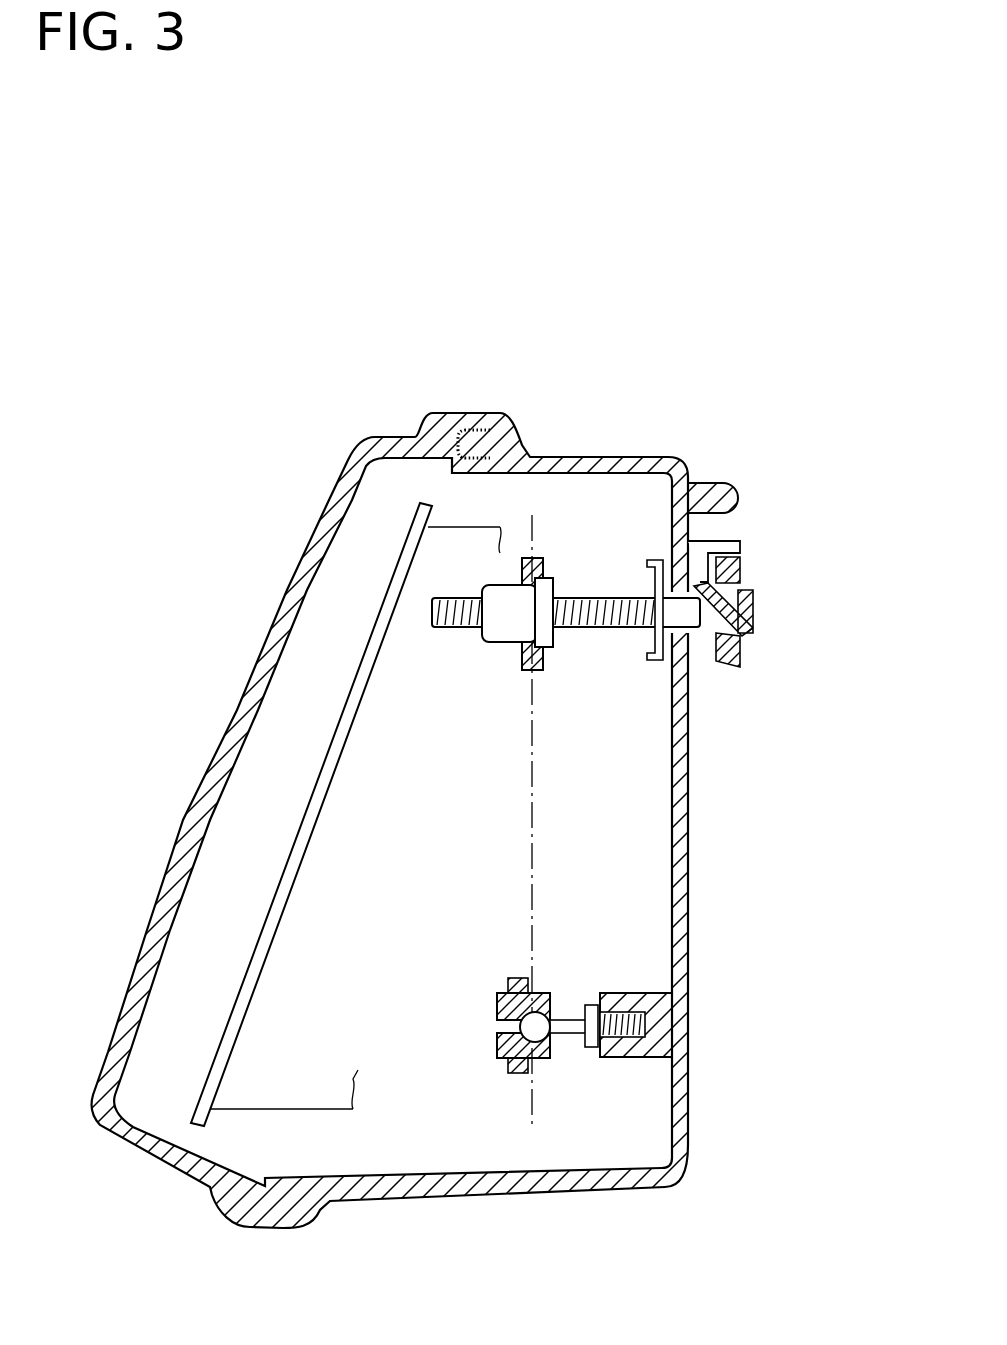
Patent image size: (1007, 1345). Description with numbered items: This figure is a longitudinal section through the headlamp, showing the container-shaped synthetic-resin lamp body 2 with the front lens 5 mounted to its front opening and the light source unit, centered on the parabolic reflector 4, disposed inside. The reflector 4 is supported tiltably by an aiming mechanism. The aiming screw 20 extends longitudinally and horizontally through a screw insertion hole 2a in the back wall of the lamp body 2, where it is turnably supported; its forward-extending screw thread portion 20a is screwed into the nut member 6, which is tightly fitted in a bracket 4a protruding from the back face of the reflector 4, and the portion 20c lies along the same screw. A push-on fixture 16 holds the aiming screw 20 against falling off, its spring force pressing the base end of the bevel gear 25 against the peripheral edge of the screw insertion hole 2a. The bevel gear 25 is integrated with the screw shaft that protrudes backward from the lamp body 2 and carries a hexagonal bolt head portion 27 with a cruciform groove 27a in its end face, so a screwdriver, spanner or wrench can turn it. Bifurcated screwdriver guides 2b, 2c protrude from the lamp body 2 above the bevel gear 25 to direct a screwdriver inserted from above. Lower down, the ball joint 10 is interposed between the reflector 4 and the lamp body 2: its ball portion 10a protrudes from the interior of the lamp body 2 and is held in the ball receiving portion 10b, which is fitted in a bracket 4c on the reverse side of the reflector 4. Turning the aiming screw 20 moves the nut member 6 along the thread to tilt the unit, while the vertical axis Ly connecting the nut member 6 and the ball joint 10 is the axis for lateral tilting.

The lamp body 2 is at (687, 928).
The screw insertion hole 2a is at (693, 627).
The screwdriver guide 2b is at (740, 545).
The screwdriver guide 2c is at (733, 487).
The reflector 4 is at (331, 905).
The bracket 4a is at (540, 577).
The bracket 4c is at (550, 993).
The front lens 5 is at (257, 658).
The nut member 6 is at (503, 593).
The ball joint 10 is at (567, 1155).
The ball portion 10a is at (535, 1030).
The ball receiving portion 10b is at (495, 1058).
The push-on fixture 16 is at (638, 567).
The aiming screw 20 is at (580, 597).
The screw thread portion 20a is at (450, 627).
The threaded portion of adjusting bolt 20c is at (593, 627).
The bevel gear 25 is at (740, 657).
The hexagonal bolt head portion 27 is at (740, 580).
The cruciform groove 27a is at (752, 611).
The vertical axis Ly is at (532, 870).